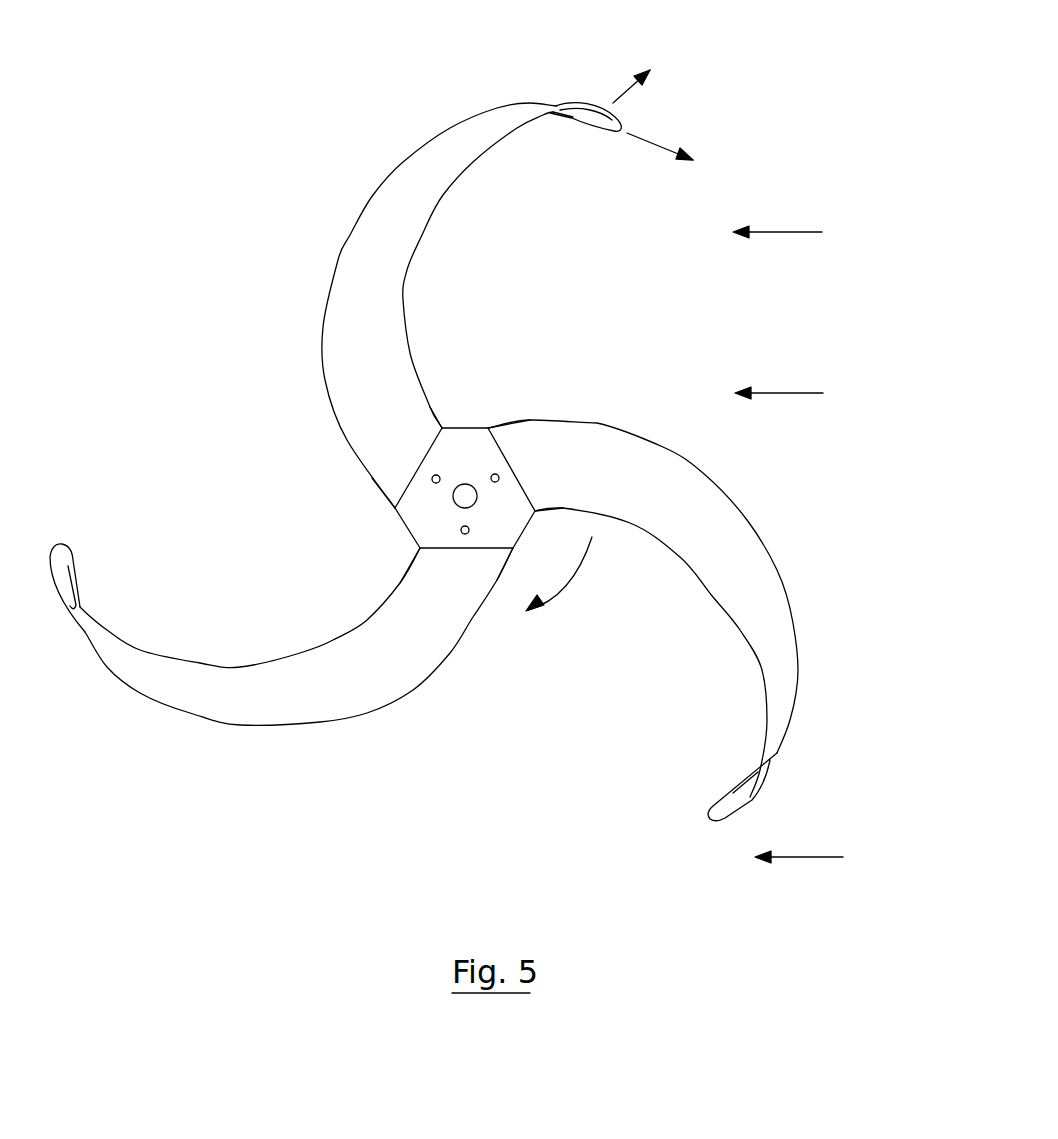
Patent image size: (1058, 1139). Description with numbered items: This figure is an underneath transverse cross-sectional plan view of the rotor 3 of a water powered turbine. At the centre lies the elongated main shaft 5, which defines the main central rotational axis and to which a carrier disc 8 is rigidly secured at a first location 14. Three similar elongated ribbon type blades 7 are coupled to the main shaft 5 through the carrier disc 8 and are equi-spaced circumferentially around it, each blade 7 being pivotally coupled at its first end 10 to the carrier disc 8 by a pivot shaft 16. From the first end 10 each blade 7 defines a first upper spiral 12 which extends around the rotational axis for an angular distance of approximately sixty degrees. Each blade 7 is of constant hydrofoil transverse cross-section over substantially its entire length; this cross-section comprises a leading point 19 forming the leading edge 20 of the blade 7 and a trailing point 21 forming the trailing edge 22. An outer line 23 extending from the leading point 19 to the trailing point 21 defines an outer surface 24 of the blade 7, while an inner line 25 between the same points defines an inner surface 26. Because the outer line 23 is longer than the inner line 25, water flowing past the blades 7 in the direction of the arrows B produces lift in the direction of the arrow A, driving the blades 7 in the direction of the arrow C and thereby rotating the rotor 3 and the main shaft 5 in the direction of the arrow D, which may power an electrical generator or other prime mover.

The rotor 3 is at (353, 848).
The main shaft 5 is at (466, 484).
The blade 7 is at (350, 330).
The carrier disc 8 is at (417, 527).
The first end 10 is at (400, 486).
The first upper spiral 12 is at (348, 382).
The first location 14 is at (477, 500).
The pivot shaft 16 is at (432, 477).
The leading point 19 is at (623, 131).
The leading edge 20 is at (617, 132).
The trailing point 21 is at (547, 115).
The trailing edge 22 is at (555, 108).
The outer line 23 is at (597, 103).
The outer surface 24 is at (583, 101).
The inner line 25 is at (563, 118).
The inner surface 26 is at (395, 273).